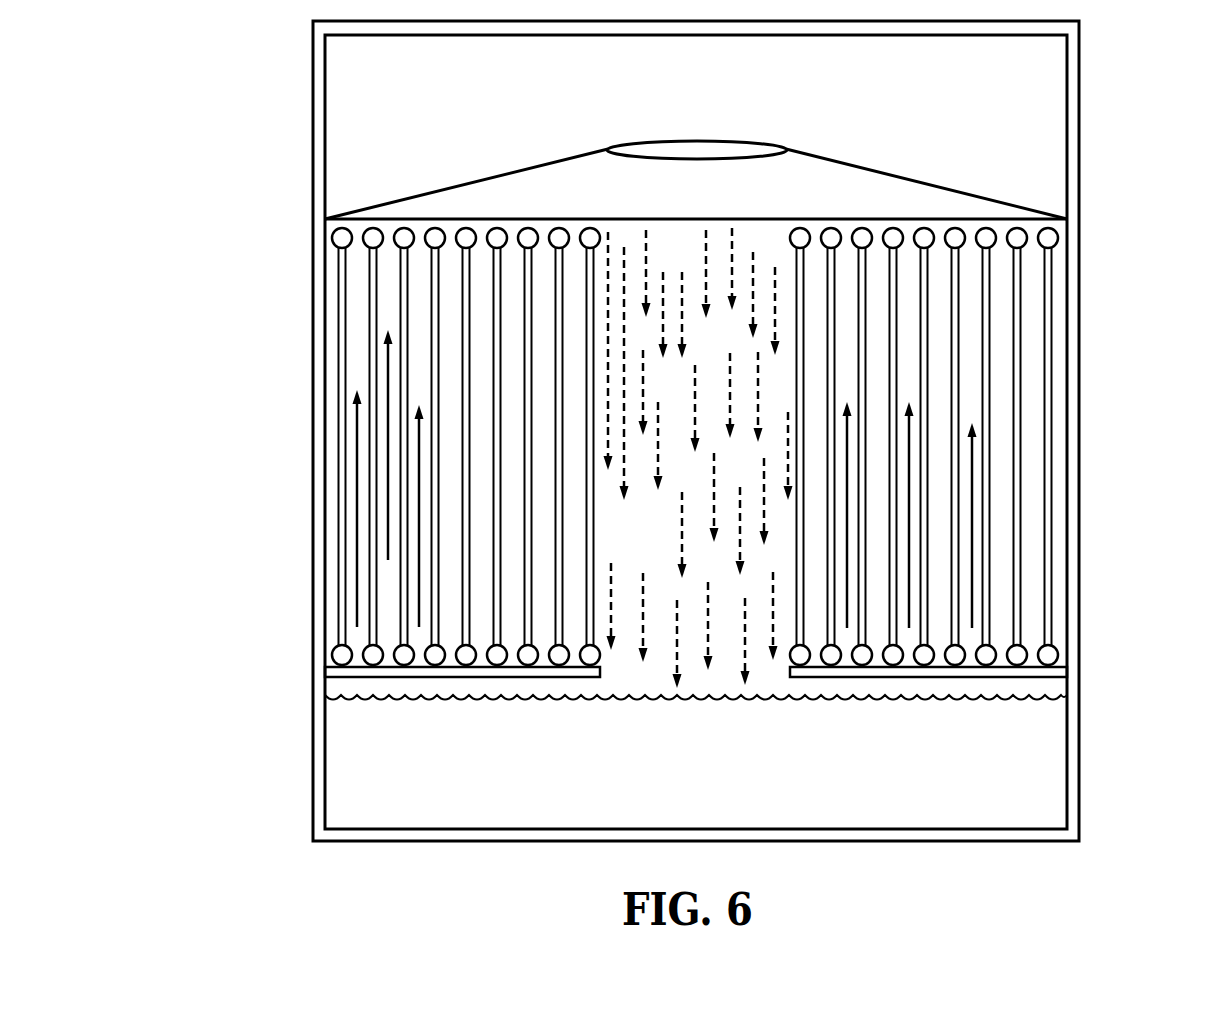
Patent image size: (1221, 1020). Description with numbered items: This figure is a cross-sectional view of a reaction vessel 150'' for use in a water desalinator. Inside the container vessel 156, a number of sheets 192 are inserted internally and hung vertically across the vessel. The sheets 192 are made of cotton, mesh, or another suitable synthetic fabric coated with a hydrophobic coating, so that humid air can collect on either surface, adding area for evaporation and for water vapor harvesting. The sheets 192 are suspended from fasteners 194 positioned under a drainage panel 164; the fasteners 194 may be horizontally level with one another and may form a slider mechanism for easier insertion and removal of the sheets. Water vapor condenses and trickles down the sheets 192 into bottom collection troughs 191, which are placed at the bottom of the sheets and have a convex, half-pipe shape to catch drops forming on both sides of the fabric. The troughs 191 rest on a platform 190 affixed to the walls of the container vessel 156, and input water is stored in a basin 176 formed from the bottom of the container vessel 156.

The reaction vessel 150'' is at (572, 431).
The container vessel 156 is at (313, 127).
The drainage panel 164 is at (902, 177).
The fasteners 194 is at (1050, 239).
The sheets 192 is at (1017, 390).
The bottom collection troughs 191 is at (340, 653).
The platform 190 is at (1058, 672).
The basin 176 is at (719, 785).